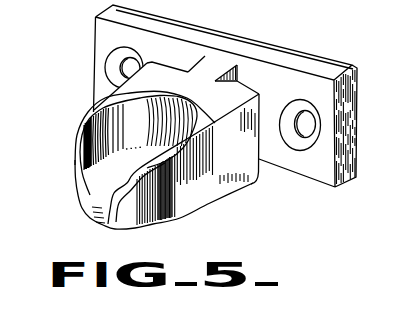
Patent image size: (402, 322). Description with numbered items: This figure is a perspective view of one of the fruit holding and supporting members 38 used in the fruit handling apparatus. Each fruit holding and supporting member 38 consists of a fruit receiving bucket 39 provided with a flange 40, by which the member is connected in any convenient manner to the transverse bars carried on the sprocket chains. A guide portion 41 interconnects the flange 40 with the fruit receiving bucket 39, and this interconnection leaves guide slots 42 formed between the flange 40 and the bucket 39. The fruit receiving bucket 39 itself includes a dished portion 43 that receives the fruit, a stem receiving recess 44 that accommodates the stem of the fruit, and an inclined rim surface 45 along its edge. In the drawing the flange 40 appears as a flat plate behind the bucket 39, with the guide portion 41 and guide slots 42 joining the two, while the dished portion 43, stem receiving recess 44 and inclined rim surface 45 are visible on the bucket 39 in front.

The fruit holding and supporting member 38 is at (143, 149).
The fruit receiving bucket 39 is at (210, 199).
The flange 40 is at (321, 70).
The guide portion 41 is at (215, 68).
The guide slot 42 is at (177, 57).
The dished portion 43 is at (94, 150).
The stem receiving recess 44 is at (102, 194).
The inclined rim surface 45 is at (93, 113).